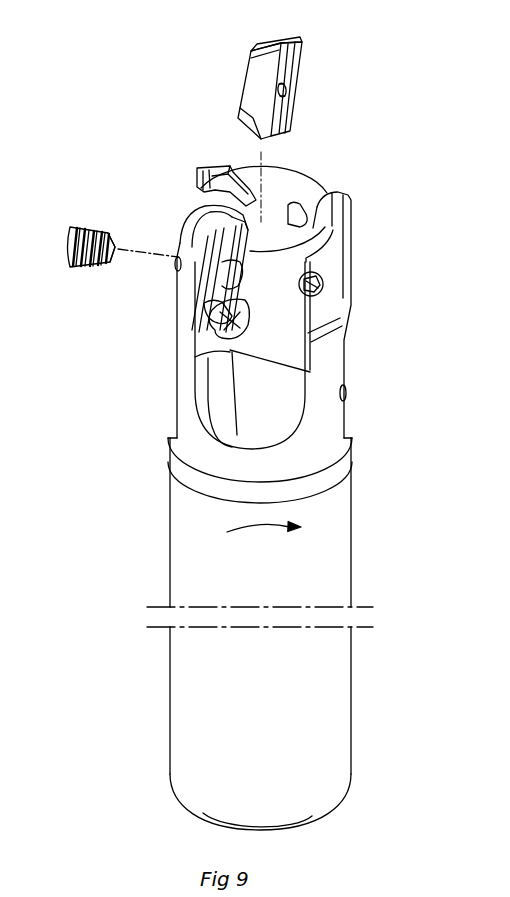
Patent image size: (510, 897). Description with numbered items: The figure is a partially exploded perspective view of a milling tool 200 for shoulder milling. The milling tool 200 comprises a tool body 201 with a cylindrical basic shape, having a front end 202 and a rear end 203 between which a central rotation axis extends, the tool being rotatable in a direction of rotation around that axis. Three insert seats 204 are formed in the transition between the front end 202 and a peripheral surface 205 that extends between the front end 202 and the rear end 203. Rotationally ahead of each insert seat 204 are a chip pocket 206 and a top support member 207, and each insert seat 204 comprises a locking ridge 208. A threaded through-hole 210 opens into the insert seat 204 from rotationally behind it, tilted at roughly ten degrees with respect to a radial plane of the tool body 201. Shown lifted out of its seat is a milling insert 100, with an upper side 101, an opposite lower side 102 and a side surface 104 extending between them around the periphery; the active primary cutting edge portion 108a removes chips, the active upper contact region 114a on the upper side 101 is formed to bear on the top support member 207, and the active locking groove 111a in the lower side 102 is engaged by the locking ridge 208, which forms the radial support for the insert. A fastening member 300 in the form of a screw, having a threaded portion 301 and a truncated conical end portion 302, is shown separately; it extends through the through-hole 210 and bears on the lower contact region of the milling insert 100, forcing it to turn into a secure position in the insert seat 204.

The milling insert 100 is at (290, 82).
The upper side 101 is at (284, 106).
The lower side 102 is at (246, 70).
The side surface 104 is at (253, 99).
The upper contact region 114a is at (295, 60).
The primary cutting edge portion 108a is at (198, 184).
The locking groove 111a is at (348, 214).
The milling tool 200 is at (291, 288).
The tool body 201 is at (302, 633).
The front end 202 is at (283, 197).
The rear end 203 is at (318, 820).
The insert seat 204 is at (232, 226).
The peripheral surface 205 is at (289, 474).
The chip pocket 206 is at (282, 368).
The top support member 207 is at (233, 316).
The locking ridge 208 is at (195, 301).
The threaded through-hole 210 is at (227, 262).
The fastening member 300 is at (235, 226).
The threaded portion 301 is at (90, 226).
The truncated conical end portion 302 is at (116, 266).